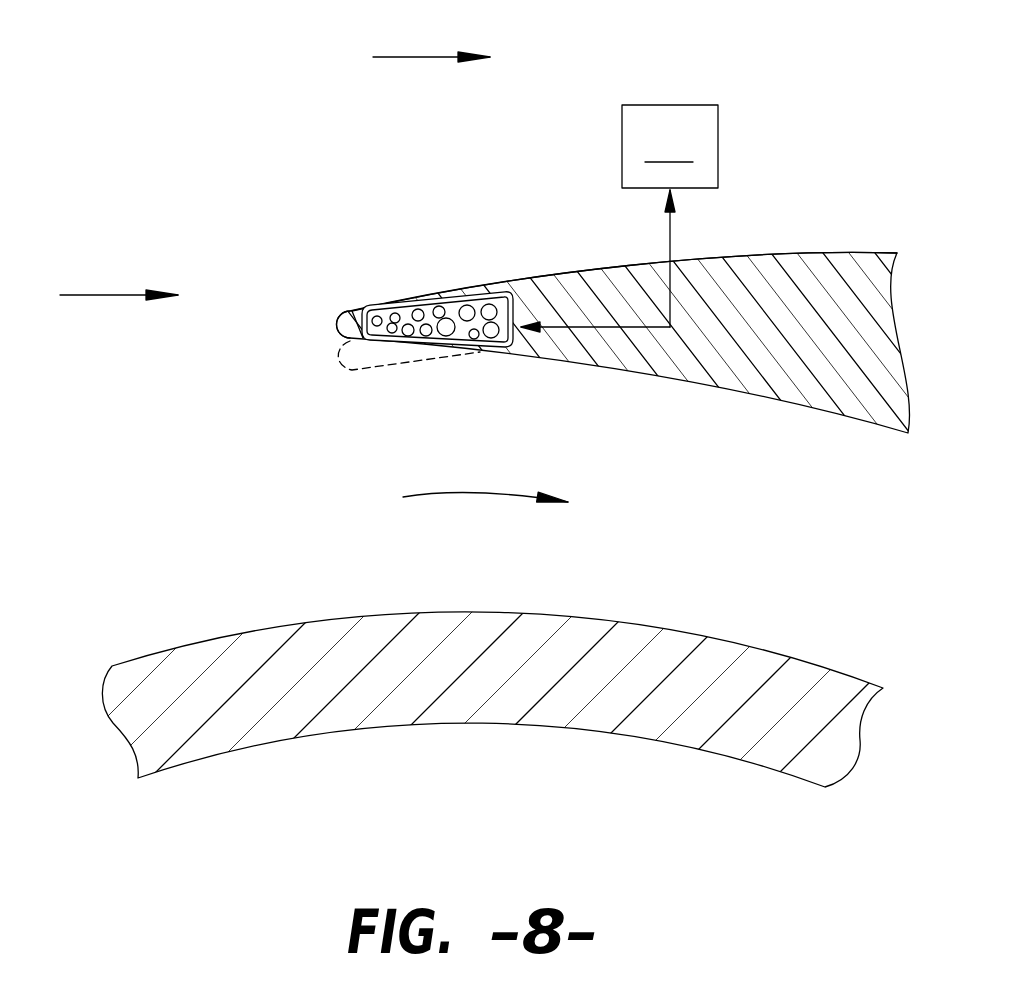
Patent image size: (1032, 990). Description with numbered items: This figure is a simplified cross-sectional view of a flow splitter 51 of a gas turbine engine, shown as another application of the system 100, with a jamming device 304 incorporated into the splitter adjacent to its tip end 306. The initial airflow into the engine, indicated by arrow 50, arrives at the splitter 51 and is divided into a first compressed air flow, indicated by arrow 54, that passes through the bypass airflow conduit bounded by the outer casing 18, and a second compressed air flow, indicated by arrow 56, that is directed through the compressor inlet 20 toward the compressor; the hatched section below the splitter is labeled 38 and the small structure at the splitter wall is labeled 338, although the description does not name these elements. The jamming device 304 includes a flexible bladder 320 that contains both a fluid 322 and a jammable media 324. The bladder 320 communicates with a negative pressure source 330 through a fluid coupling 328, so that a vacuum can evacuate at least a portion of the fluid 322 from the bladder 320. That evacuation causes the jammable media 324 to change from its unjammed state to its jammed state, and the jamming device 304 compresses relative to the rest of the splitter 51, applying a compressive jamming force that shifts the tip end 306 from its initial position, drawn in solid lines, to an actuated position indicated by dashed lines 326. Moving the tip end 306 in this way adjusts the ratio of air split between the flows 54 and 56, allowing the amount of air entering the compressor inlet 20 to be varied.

The system 100 is at (247, 112).
The outer casing 18 is at (808, 247).
The compressor inlet 20 is at (293, 497).
The shroud 38 is at (265, 658).
The initial airflow arrow 50 is at (102, 293).
The flow splitter 51 is at (557, 292).
The first compressed air flow arrow 54 is at (415, 56).
The second compressed air flow arrow 56 is at (457, 495).
The jamming device 304 is at (403, 347).
The tip end 306 is at (333, 325).
The flexible bladder 320 is at (442, 300).
The fluid 322 is at (407, 310).
The jammable media 324 is at (469, 340).
The dashed lines 326 is at (375, 368).
The fluid coupling 328 is at (617, 328).
The negative pressure source 330 is at (670, 216).
The inner sheath 338 is at (493, 290).